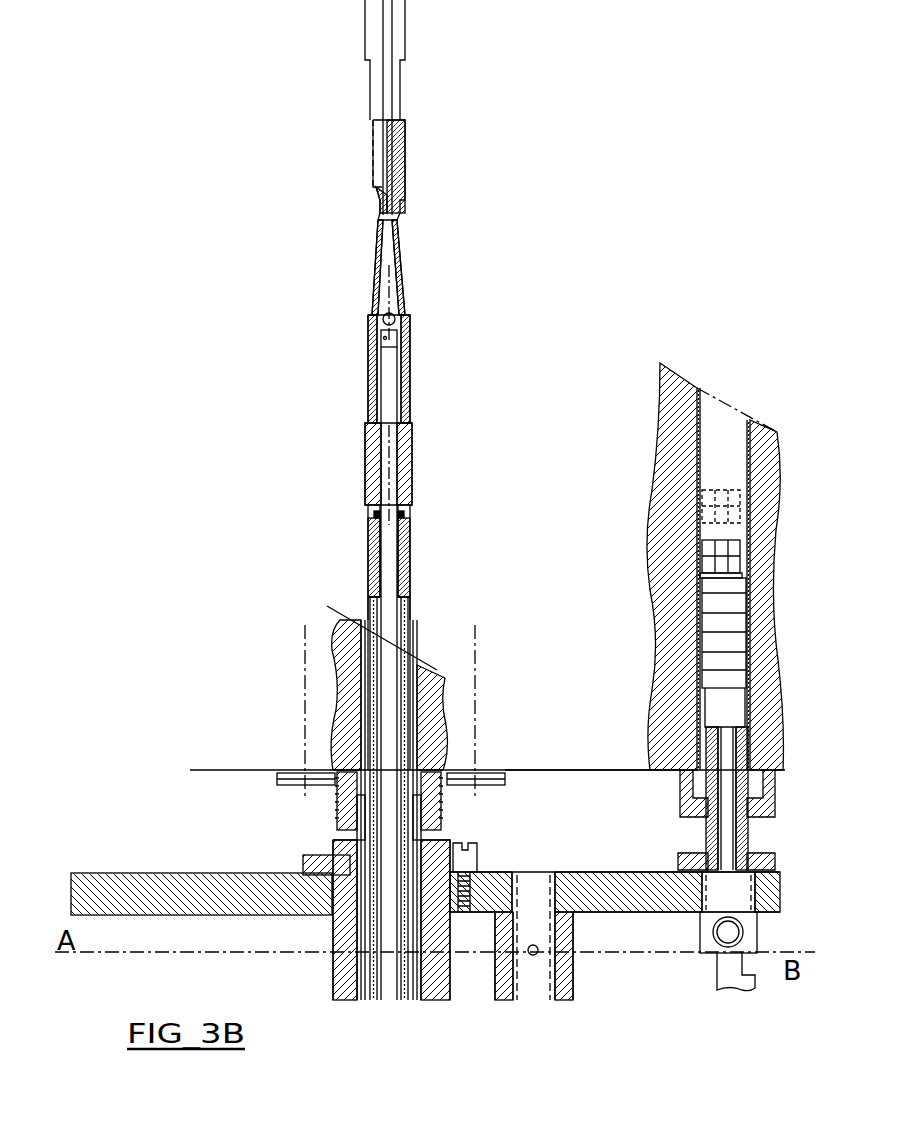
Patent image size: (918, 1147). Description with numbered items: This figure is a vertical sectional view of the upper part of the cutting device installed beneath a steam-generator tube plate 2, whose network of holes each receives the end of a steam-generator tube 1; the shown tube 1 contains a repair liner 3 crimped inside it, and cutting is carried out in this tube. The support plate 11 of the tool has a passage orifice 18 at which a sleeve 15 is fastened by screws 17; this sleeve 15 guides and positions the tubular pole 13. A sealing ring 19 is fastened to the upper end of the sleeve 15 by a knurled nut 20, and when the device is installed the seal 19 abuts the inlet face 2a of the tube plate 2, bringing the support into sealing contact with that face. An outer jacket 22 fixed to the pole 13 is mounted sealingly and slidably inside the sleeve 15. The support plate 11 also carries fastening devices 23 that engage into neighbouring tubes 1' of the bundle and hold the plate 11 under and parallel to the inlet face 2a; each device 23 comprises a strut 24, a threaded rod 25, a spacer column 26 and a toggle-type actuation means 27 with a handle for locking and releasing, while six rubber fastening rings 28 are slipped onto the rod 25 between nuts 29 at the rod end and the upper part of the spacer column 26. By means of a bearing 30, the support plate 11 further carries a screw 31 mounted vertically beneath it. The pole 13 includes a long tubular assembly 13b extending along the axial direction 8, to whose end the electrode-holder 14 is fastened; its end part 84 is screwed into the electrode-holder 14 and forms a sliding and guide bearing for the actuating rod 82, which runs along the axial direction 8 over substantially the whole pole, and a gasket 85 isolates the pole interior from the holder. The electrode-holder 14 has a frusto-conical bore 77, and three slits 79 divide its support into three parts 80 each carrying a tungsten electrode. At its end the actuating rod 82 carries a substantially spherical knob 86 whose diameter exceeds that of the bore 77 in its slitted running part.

The support parts 80 is at (366, 30).
The slits 79 is at (393, 90).
The electrode-holder 14 is at (406, 176).
The bore 77 is at (398, 278).
The knob 86 is at (385, 321).
The actuating rod 82 is at (392, 388).
The axial direction 8 is at (389, 443).
The end part 84 is at (412, 482).
The gasket 85 is at (404, 515).
The pole 13 is at (412, 640).
The tubular assembly 13b is at (404, 604).
The repair liner 3 is at (430, 703).
The steam-generator tube 1 is at (487, 746).
The knurled nut 20 is at (337, 808).
The sealing ring 19 is at (441, 802).
The outer jacket 22 is at (360, 832).
The inlet face 2a is at (545, 773).
The tube plate 2 is at (563, 745).
The passage orifice 18 is at (325, 900).
The sleeve 15 is at (305, 858).
The support plate 11 is at (193, 872).
The screws 17 is at (465, 866).
The bearing 30 is at (573, 936).
The screw 31 is at (540, 975).
The tubes 1' is at (703, 566).
The nuts 29 is at (738, 572).
The rubber fastening rings 28 is at (712, 645).
The spacer column 26 is at (708, 738).
The fastening devices 23 is at (749, 757).
The threaded rod 25 is at (728, 838).
The strut 24 is at (763, 800).
The toggle-type actuation means 27 is at (758, 936).